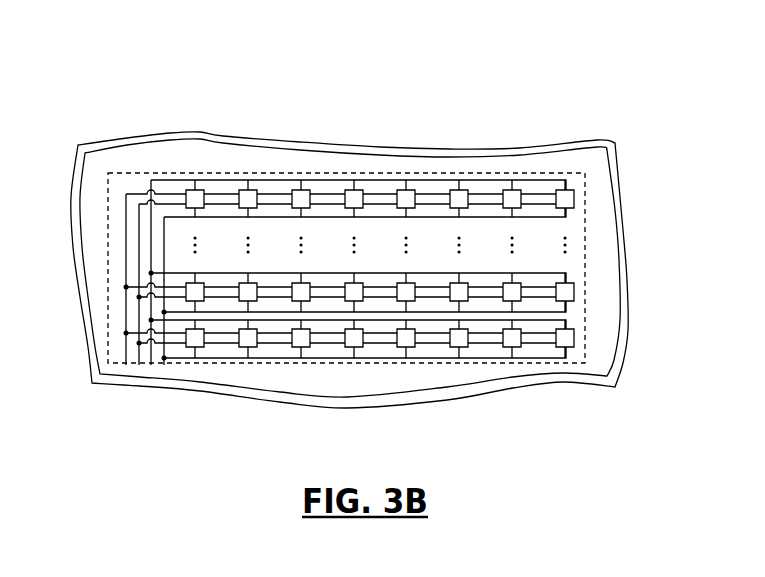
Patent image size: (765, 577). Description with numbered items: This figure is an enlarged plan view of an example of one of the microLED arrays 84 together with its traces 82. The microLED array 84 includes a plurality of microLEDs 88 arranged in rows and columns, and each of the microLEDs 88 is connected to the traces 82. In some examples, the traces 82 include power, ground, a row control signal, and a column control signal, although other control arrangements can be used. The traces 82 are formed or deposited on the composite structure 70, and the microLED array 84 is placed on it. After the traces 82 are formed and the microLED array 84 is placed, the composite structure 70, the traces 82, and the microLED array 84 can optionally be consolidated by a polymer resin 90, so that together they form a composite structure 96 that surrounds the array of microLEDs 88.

The composite structure 96 is at (373, 236).
The composite structure 70 is at (223, 134).
The polymer resin 90 is at (428, 150).
The microLED 88 is at (573, 190).
The microLED array 84 is at (248, 371).
The traces 82 is at (137, 367).